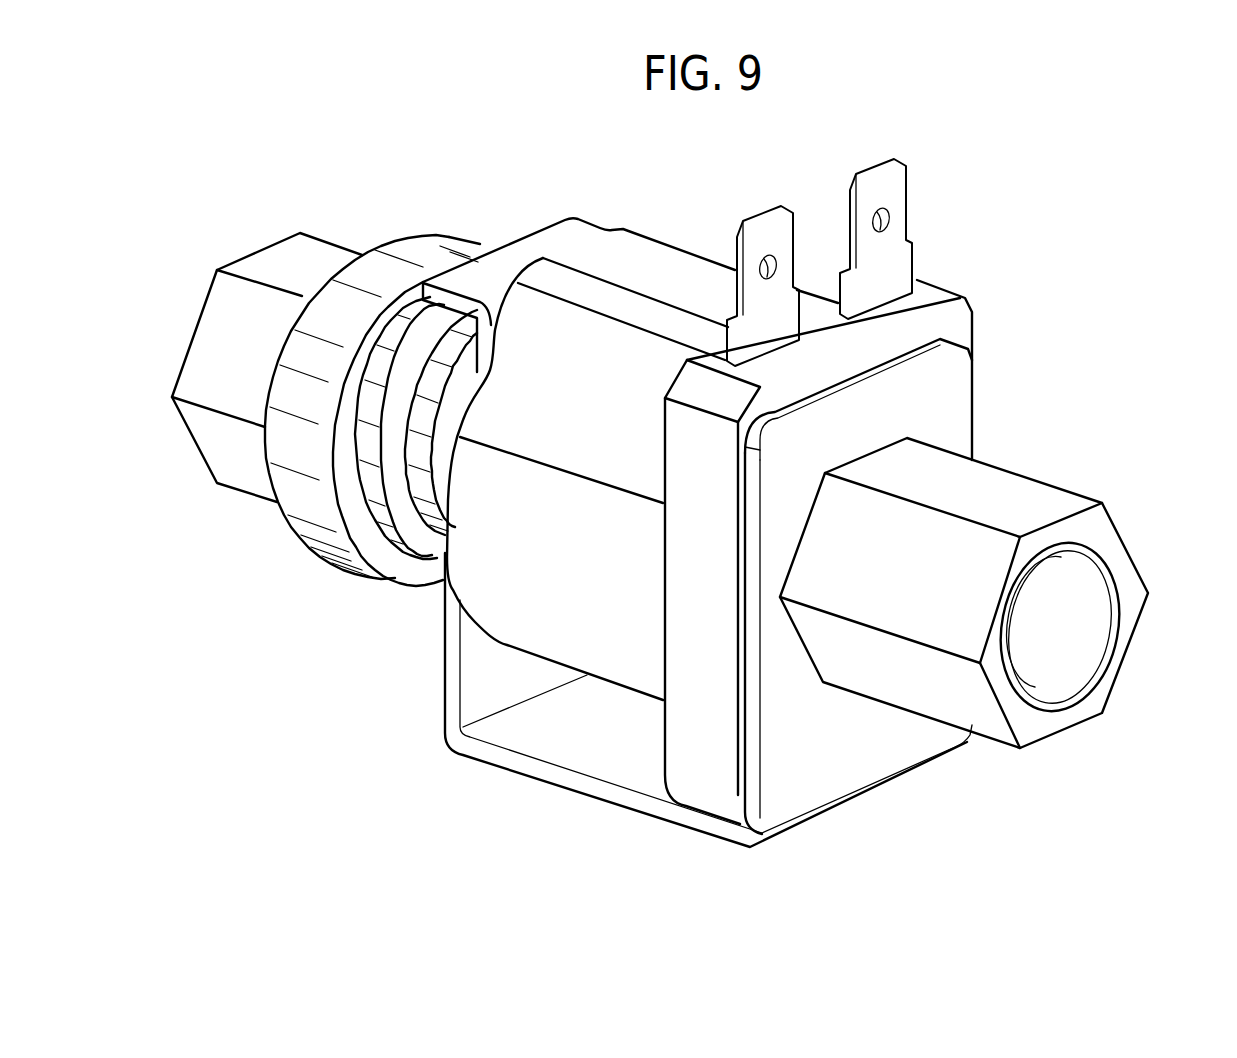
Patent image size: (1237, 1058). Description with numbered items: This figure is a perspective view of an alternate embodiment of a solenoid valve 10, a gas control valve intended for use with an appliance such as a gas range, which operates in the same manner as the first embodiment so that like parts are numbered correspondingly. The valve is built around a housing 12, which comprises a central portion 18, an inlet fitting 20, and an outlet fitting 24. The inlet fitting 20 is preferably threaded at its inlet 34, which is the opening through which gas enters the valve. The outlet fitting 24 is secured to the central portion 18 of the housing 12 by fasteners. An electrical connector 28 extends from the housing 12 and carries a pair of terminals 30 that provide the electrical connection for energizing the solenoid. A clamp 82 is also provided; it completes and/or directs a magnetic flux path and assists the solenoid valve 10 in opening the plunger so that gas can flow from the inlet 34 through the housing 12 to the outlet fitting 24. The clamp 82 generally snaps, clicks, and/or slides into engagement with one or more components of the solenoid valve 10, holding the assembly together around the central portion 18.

The solenoid valve 10 is at (1053, 168).
The housing 12 is at (688, 243).
The central portion 18 is at (570, 623).
The inlet fitting 20 is at (1047, 497).
The outlet fitting 24 is at (443, 243).
The electrical connector 28 is at (831, 170).
The terminals 30 is at (897, 197).
The inlet 34 is at (1062, 627).
The clamp 82 is at (873, 768).